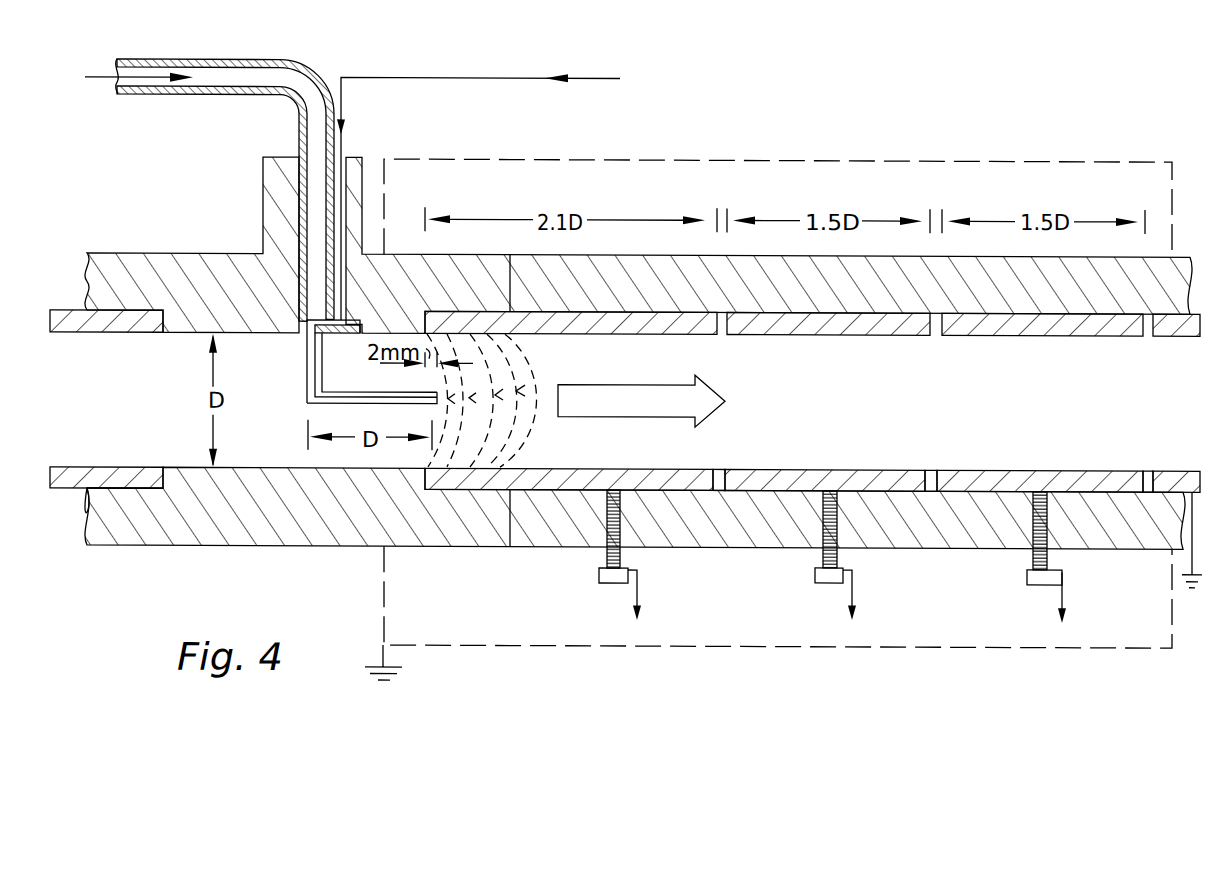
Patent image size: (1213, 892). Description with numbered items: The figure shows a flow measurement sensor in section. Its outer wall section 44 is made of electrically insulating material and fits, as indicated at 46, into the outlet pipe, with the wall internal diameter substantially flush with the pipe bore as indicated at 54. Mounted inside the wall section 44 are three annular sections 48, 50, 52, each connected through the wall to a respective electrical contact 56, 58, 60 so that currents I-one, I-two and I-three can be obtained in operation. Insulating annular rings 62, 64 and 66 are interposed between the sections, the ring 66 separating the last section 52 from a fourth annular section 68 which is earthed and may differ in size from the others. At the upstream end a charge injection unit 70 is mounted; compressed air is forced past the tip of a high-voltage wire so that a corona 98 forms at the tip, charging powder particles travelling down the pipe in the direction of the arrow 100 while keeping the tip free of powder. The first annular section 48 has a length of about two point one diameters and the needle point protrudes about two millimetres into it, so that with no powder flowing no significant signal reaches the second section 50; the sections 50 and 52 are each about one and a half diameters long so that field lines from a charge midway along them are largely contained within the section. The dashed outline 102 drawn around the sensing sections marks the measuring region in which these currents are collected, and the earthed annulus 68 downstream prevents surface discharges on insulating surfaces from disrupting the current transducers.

The outer wall section 44 is at (299, 532).
The fit into the outlet pipe 46 is at (84, 495).
The first annular section 48 is at (628, 466).
The second annular section 50 is at (841, 466).
The third annular section 52 is at (1037, 466).
The flush region 54 is at (168, 455).
The first electrical contact 56 is at (599, 572).
The second electrical contact 58 is at (815, 572).
The third electrical contact 60 is at (1027, 575).
The first insulating annular ring 62 is at (720, 466).
The second insulating annular ring 64 is at (934, 466).
The third insulating annular ring 66 is at (1148, 466).
The fourth annular section 68 is at (1180, 458).
The charge injection unit 70 is at (221, 217).
The corona 98 is at (520, 364).
The arrow indicating powder flow 100 is at (676, 380).
The measuring region 102 is at (673, 155).